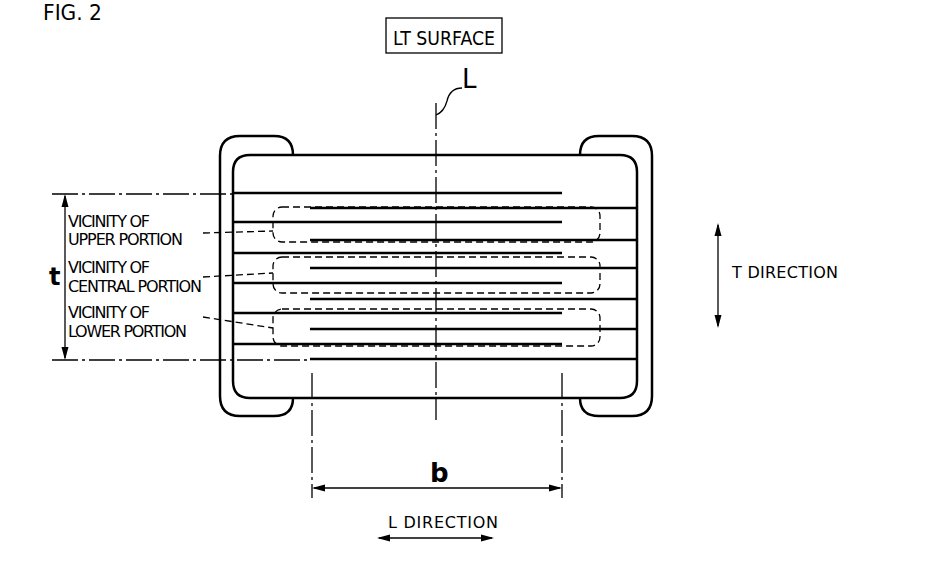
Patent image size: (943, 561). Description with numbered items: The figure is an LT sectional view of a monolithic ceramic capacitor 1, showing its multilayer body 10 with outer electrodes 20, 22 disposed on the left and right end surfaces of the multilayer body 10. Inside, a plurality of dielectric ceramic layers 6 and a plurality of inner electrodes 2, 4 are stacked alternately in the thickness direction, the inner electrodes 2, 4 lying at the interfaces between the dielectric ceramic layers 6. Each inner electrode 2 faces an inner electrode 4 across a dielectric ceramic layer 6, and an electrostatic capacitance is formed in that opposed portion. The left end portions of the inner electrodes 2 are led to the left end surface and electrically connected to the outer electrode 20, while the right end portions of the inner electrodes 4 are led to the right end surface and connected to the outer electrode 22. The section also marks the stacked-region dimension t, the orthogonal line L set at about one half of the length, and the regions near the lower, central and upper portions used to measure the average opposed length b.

The monolithic ceramic capacitor 1 is at (190, 106).
The inner electrode 2 is at (390, 344).
The inner electrode 4 is at (457, 208).
The dielectric ceramic layer 6 is at (608, 221).
The multilayer body 10 is at (498, 154).
The outer electrode 20 is at (257, 137).
The outer electrode 22 is at (613, 137).